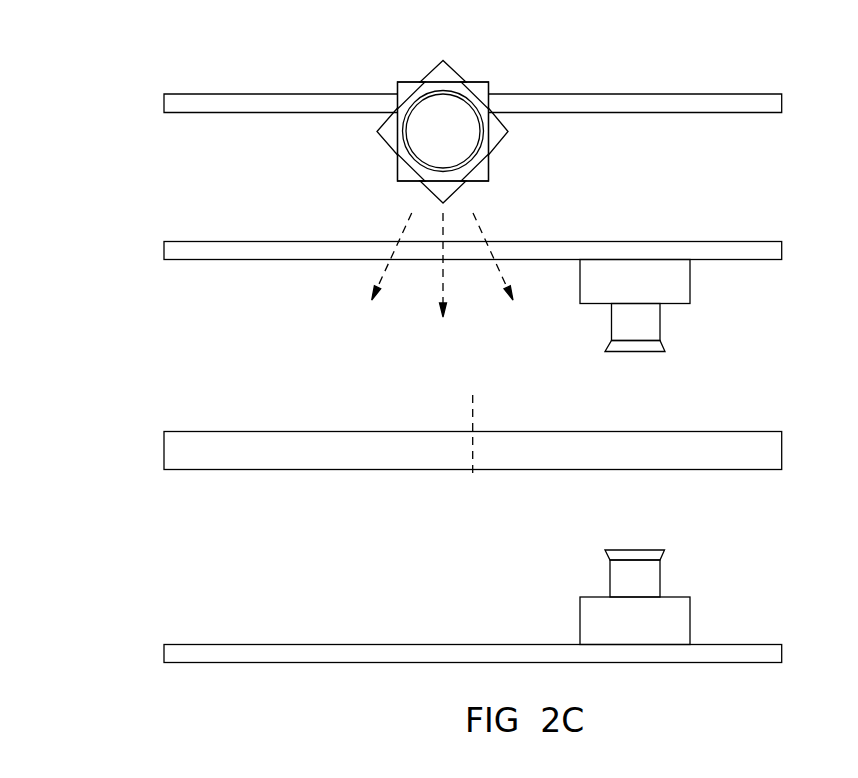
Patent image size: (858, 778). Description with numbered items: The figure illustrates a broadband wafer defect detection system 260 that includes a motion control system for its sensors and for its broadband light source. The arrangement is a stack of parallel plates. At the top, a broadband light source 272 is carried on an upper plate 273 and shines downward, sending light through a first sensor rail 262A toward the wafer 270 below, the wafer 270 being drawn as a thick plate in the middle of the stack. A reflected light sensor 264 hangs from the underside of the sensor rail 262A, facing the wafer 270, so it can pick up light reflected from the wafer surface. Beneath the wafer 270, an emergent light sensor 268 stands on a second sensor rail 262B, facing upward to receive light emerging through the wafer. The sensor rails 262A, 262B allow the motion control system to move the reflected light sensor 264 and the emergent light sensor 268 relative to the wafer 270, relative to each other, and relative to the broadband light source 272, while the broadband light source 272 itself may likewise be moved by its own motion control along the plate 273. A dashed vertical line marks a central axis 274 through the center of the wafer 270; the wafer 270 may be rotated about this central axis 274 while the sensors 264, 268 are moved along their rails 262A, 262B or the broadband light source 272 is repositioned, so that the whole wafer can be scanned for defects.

The broadband wafer defect detection system 260 is at (110, 71).
The sensor rail 262A is at (275, 242).
The sensor rail 262B is at (753, 662).
The reflected light sensor 264 is at (690, 280).
The emergent light sensor 268 is at (690, 623).
The wafer 270 is at (753, 470).
The broadband light source 272 is at (508, 131).
The broadband light source rail 273 is at (702, 94).
The central axis 274 is at (473, 488).